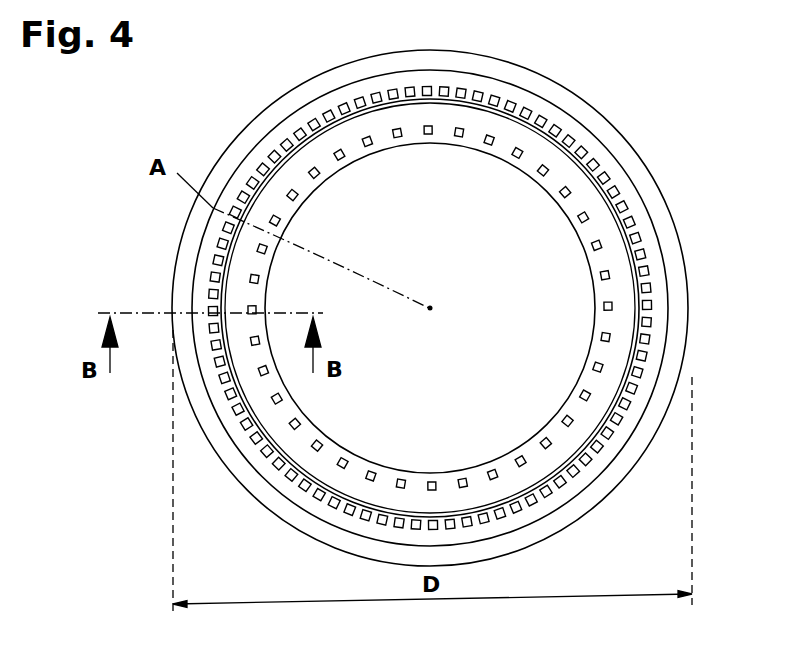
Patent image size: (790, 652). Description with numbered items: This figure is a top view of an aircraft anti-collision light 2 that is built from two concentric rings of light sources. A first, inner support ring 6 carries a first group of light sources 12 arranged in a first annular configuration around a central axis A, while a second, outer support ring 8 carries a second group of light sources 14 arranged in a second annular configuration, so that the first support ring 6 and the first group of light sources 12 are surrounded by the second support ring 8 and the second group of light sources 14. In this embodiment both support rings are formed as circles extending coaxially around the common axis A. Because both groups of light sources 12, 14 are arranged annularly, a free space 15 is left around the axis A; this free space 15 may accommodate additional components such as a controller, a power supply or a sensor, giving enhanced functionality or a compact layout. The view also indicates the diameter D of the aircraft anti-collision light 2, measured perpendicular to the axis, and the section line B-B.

The aircraft anti-collision light 2 is at (658, 83).
The second support ring 8 is at (628, 132).
The second group of light sources 14 is at (560, 127).
The first group of light sources 12 is at (606, 242).
The first support ring 6 is at (650, 278).
The free space 15 is at (442, 370).